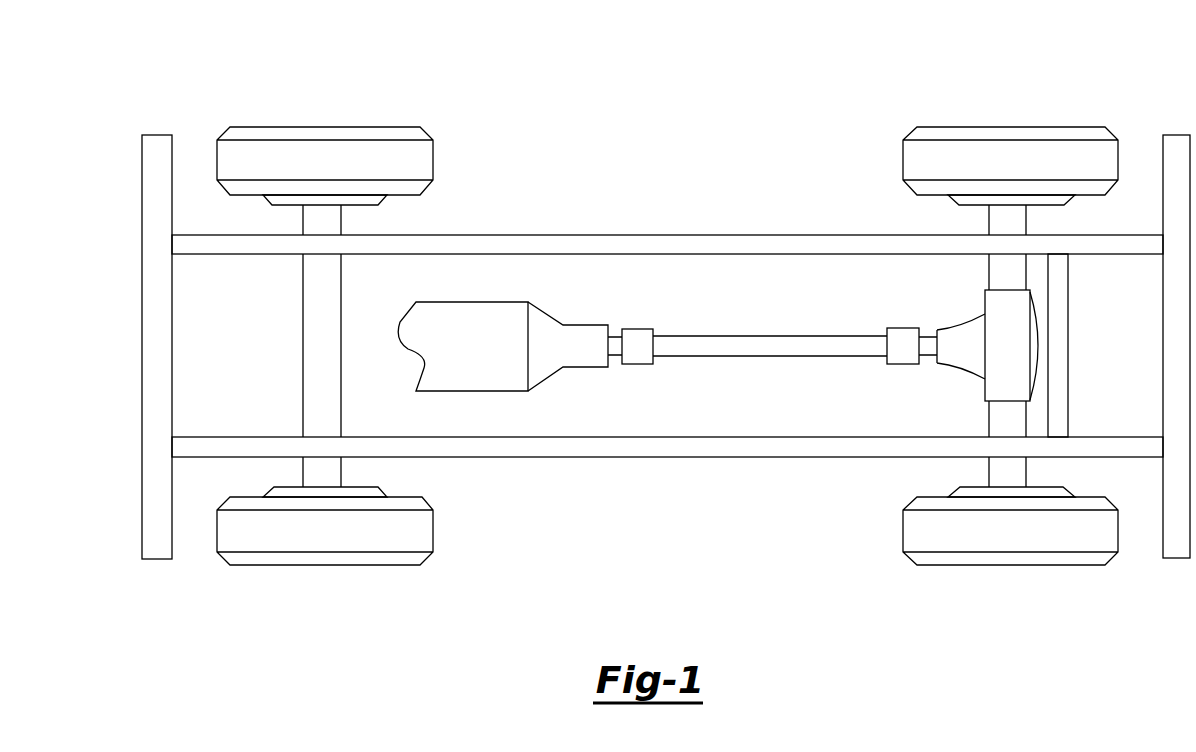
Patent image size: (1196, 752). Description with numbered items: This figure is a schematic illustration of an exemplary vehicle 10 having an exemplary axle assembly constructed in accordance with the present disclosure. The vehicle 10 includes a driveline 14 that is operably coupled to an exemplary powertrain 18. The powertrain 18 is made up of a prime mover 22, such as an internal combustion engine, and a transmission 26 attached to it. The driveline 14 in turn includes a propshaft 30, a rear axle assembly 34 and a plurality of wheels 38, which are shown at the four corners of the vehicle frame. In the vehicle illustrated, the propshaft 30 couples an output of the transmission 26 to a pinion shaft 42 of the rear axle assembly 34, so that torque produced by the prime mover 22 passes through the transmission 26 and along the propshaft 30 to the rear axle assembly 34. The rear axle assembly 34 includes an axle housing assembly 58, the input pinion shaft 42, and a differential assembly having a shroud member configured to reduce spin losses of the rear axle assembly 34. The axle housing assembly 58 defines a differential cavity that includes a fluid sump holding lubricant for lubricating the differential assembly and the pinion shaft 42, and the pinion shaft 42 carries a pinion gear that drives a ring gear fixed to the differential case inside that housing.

The vehicle 10 is at (640, 170).
The driveline 14 is at (862, 362).
The powertrain 18 is at (510, 352).
The prime mover 22 is at (485, 391).
The transmission 26 is at (572, 367).
The propshaft 30 is at (792, 355).
The rear axle assembly 34 is at (991, 395).
The wheels 38 is at (255, 127).
The pinion shaft 42 is at (930, 333).
The axle housing assembly 58 is at (1040, 406).